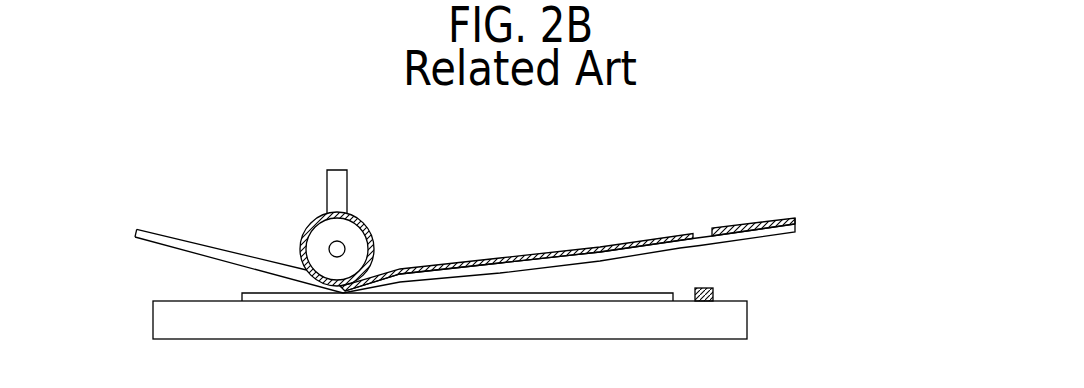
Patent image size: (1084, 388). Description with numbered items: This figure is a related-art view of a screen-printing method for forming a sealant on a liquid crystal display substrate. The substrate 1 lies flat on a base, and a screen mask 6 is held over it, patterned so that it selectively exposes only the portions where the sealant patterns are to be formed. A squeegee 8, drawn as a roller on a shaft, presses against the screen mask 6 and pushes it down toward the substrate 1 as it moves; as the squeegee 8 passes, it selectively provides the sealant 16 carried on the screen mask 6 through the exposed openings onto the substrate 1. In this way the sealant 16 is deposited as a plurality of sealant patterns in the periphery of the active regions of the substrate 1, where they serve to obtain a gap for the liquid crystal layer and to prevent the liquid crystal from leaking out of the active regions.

The substrate 1 is at (737, 323).
The screen mask 6 is at (797, 228).
The squeegee 8 is at (358, 243).
The sealant 16 is at (746, 228).